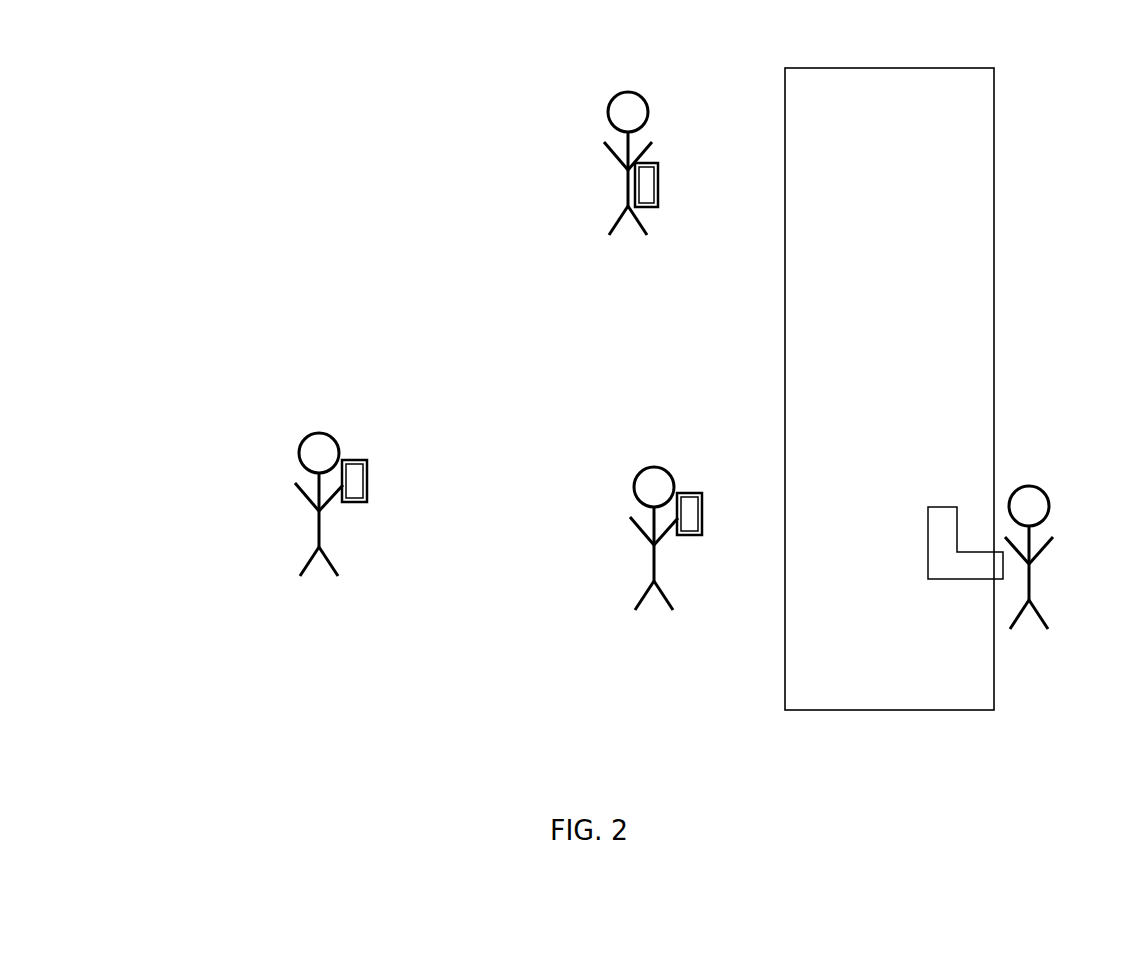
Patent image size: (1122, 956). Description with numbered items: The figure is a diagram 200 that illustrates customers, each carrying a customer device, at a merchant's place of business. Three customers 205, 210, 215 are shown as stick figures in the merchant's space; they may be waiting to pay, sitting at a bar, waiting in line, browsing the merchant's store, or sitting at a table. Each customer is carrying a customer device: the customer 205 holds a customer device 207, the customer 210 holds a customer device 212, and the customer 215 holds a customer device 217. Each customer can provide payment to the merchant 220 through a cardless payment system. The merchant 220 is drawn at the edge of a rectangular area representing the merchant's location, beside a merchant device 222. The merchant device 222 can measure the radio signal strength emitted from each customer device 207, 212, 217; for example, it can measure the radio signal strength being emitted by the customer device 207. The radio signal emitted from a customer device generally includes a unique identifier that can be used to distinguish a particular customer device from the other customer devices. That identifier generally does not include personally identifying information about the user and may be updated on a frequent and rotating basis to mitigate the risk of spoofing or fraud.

The diagram 200 is at (284, 68).
The customer 205 is at (608, 182).
The customer device 207 is at (658, 182).
The customer 210 is at (633, 558).
The customer device 212 is at (702, 533).
The customer 215 is at (299, 524).
The customer device 217 is at (367, 500).
The merchant 220 is at (1044, 568).
The merchant device 222 is at (922, 563).